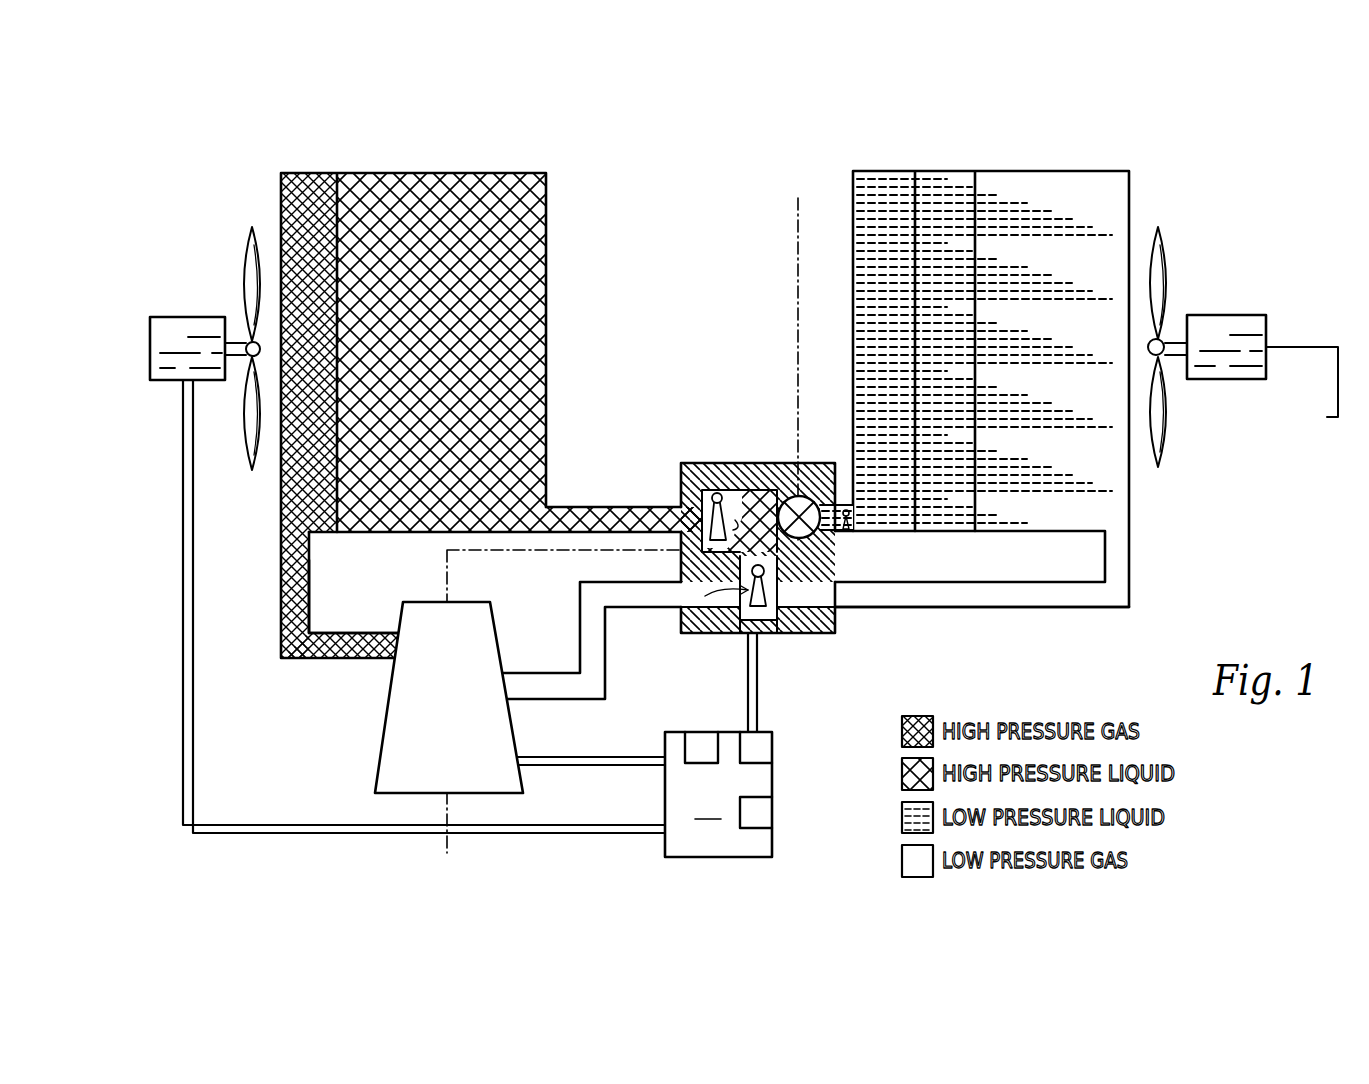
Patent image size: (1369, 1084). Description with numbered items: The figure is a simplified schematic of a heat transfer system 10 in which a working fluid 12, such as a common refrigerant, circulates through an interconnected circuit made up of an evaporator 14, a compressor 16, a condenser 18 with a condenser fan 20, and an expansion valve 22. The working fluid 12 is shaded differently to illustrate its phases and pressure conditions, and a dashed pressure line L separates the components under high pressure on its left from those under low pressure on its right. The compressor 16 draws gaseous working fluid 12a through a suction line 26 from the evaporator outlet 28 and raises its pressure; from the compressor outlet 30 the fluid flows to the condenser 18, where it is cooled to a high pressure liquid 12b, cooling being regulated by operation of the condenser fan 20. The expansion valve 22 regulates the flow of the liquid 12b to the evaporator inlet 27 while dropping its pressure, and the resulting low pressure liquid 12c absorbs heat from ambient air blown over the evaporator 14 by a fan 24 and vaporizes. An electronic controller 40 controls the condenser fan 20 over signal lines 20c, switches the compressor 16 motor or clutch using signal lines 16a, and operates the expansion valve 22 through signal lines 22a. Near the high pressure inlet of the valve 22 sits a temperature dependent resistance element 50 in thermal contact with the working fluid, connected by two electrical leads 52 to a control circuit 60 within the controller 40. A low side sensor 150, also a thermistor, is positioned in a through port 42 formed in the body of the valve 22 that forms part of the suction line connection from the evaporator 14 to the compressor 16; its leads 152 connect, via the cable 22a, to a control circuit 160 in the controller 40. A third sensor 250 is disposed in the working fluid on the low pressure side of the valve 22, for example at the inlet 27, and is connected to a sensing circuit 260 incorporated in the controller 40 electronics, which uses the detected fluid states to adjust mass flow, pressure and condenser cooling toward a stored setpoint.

The heat transfer system 10 is at (1215, 218).
The working fluid 12 is at (617, 512).
The gaseous working fluid 12a is at (1060, 595).
The high pressure liquid working fluid 12b is at (505, 280).
The low pressure liquid working fluid 12c is at (868, 215).
The evaporator 14 is at (1132, 190).
The compressor 16 is at (390, 690).
The signal lines 16a is at (606, 757).
The condenser 18 is at (378, 170).
The condenser fan 20 is at (195, 309).
The fan motor control line 20c is at (527, 833).
The expansion valve 22 is at (785, 458).
The signal lines 22a is at (758, 705).
The fan 24 is at (1218, 304).
The suction line 26 is at (605, 660).
The evaporator inlet 27 is at (847, 462).
The evaporator outlet 28 is at (1115, 555).
The compressor outlet 30 is at (395, 633).
The electronic controller circuit 40 is at (718, 794).
The through port 42 is at (778, 592).
The temperature dependent electrical resistance element 50 is at (757, 462).
The electrical leads 52 is at (722, 462).
The control circuit 60 is at (763, 745).
The low side sensor 150 is at (790, 625).
The electrical leads 152 is at (740, 626).
The control circuit 160 is at (702, 745).
The third sensor 250 is at (856, 513).
The sensing circuit 260 is at (757, 815).
The pressure line L is at (798, 262).